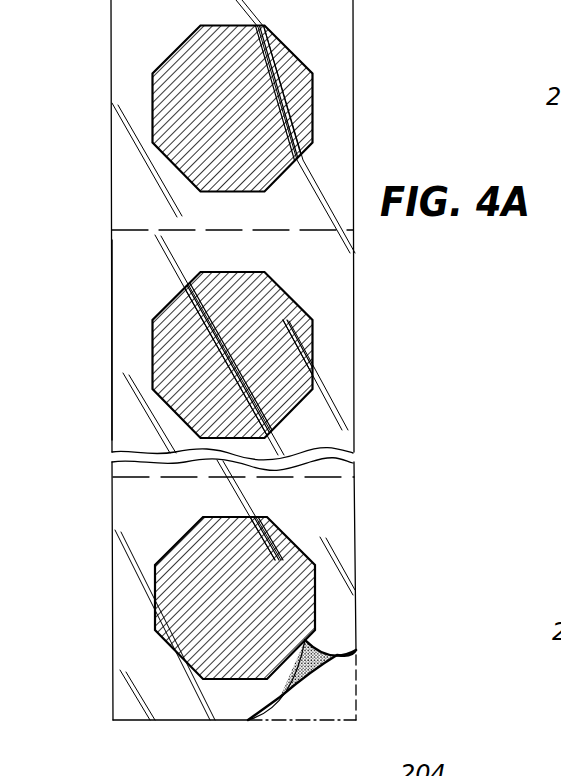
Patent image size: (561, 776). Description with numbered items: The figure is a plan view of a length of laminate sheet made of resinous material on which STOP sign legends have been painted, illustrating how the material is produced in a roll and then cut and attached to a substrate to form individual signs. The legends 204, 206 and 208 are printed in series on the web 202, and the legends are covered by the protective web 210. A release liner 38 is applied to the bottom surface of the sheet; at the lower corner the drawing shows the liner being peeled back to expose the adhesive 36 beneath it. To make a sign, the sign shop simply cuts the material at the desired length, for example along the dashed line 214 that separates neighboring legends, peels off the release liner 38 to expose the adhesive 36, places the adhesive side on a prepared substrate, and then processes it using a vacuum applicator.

The web 202 is at (353, 57).
The legend 204 is at (287, 50).
The legend 206 is at (297, 300).
The third stop sign label 208 is at (317, 520).
The protective web 210 is at (130, 310).
The dashed line 214 is at (135, 478).
The adhesive 36 is at (323, 668).
The release liner 38 is at (323, 698).